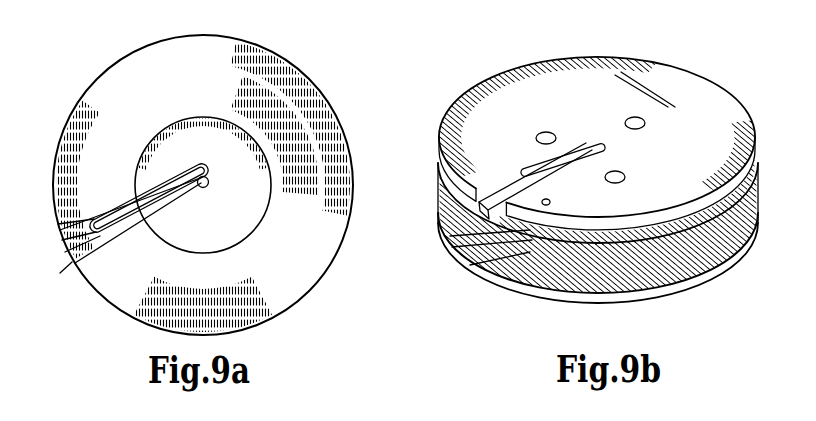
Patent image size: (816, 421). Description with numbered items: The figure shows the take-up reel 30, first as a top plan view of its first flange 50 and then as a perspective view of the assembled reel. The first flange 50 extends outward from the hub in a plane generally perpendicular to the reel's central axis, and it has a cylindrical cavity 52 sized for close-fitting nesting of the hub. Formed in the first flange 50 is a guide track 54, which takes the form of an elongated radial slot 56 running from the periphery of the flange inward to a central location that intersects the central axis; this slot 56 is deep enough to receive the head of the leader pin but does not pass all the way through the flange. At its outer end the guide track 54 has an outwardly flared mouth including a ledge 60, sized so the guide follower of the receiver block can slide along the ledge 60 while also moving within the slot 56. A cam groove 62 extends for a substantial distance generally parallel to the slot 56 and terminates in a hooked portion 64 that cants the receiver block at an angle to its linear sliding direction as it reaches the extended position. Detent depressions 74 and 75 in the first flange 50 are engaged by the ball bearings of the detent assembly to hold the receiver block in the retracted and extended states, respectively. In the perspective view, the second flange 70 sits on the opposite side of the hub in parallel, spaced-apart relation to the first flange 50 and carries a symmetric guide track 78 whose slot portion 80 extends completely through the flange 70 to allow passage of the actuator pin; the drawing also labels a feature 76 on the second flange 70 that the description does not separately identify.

In FIG. 9B, the take-up reel 30 is at (670, 51).
In FIG. 9A, the first flange 50 is at (320, 47).
In FIG. 9B, the first flange 50 is at (656, 277).
In FIG. 9A, the cylindrical cavity 52 is at (207, 142).
In FIG. 9A, the guide track 54 is at (70, 264).
In FIG. 9B, the guide track 54 is at (478, 287).
In FIG. 9A, the elongated radial slot 56 is at (177, 202).
In FIG. 9A, the ledge 60 is at (78, 238).
In FIG. 9A, the cam groove 62 is at (153, 184).
In FIG. 9B, the cam groove 62 is at (531, 243).
In FIG. 9A, the hooked portion 64 is at (85, 218).
In FIG. 9B, the second flange 70 is at (695, 108).
In FIG. 9A, the detent depression 74 is at (207, 177).
In FIG. 9A, the detent depression 75 is at (145, 212).
In FIG. 9B, the top disc slot 76 is at (568, 143).
In FIG. 9B, the guide track 78 is at (476, 217).
In FIG. 9B, the slot portion 80 is at (555, 178).